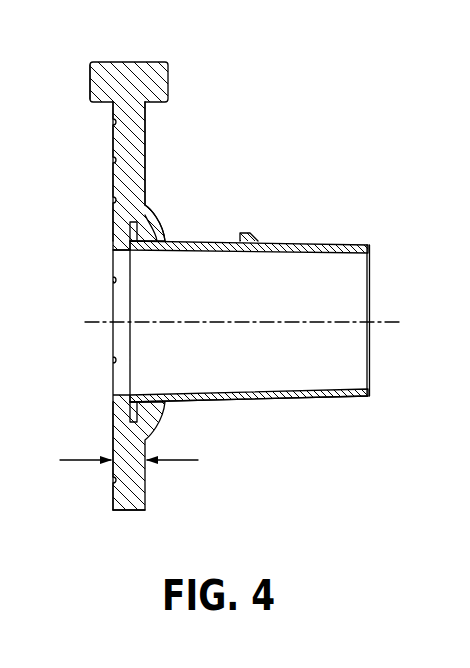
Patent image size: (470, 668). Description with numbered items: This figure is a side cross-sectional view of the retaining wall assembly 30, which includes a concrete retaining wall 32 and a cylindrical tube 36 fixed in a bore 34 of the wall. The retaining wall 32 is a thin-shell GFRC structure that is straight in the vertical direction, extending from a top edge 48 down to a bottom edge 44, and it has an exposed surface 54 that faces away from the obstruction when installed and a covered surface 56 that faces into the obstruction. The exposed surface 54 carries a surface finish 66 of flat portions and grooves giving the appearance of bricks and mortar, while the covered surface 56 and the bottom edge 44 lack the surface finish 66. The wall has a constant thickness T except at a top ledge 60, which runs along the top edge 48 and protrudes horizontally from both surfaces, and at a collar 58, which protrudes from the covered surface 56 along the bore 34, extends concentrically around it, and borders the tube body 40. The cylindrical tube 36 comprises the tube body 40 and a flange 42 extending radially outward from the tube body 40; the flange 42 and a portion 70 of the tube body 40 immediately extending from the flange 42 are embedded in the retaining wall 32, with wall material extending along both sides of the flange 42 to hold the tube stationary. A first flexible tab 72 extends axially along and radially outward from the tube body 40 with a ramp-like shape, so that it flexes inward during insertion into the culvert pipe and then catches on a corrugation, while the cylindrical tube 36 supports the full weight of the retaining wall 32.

The retaining wall assembly 30 is at (275, 132).
The retaining wall 32 is at (150, 490).
The bore 34 is at (113, 262).
The cylindrical tube 36 is at (319, 245).
The tube body 40 is at (305, 397).
The flange 42 is at (150, 408).
The bottom edge 44 is at (128, 510).
The top edge 48 is at (118, 62).
The exposed surface 54 is at (113, 141).
The covered surface 56 is at (145, 133).
The collar 58 is at (158, 231).
The top ledge 60 is at (90, 78).
The surface finish 66 is at (113, 439).
The portion of the tube body 70 is at (150, 216).
The first flexible tab 72 is at (247, 238).